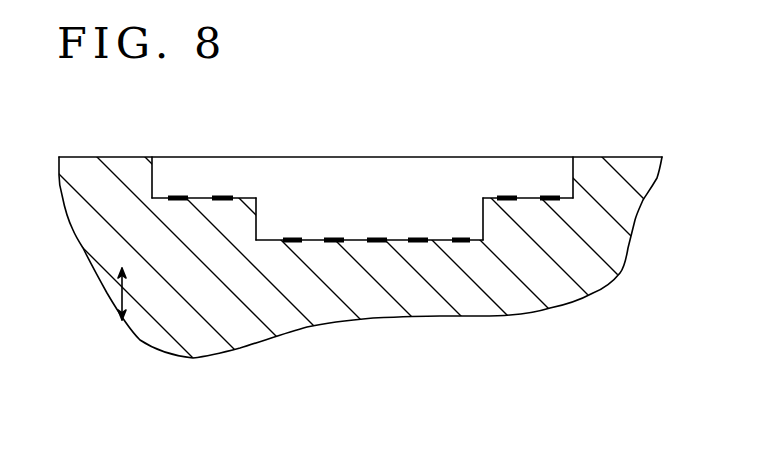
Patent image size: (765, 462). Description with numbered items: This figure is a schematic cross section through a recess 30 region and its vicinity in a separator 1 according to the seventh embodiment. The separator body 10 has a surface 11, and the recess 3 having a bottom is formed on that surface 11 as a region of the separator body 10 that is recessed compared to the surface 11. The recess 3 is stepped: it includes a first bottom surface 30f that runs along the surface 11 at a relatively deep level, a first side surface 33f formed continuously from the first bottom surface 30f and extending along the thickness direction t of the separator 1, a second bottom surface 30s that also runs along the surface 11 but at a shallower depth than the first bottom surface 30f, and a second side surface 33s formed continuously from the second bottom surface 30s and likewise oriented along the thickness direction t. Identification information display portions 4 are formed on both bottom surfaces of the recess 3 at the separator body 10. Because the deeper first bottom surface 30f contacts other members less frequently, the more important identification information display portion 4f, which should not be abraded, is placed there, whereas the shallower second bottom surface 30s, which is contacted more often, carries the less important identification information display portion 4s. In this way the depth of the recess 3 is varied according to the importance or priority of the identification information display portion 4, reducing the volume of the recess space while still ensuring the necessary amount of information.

The separator 1 is at (382, 250).
The separator body 10 is at (608, 262).
The surface 11 is at (598, 157).
The recess 3 is at (371, 218).
The recess 30 is at (371, 218).
The second bottom surface 30s is at (198, 196).
The first bottom surface 30f is at (355, 237).
The second side surface 33s is at (149, 170).
The first side surface 33f is at (257, 237).
The identification information display portion 4 is at (361, 286).
The identification information display portion 4s is at (182, 201).
The identification information display portion 4f is at (291, 243).
The thickness direction t is at (126, 292).